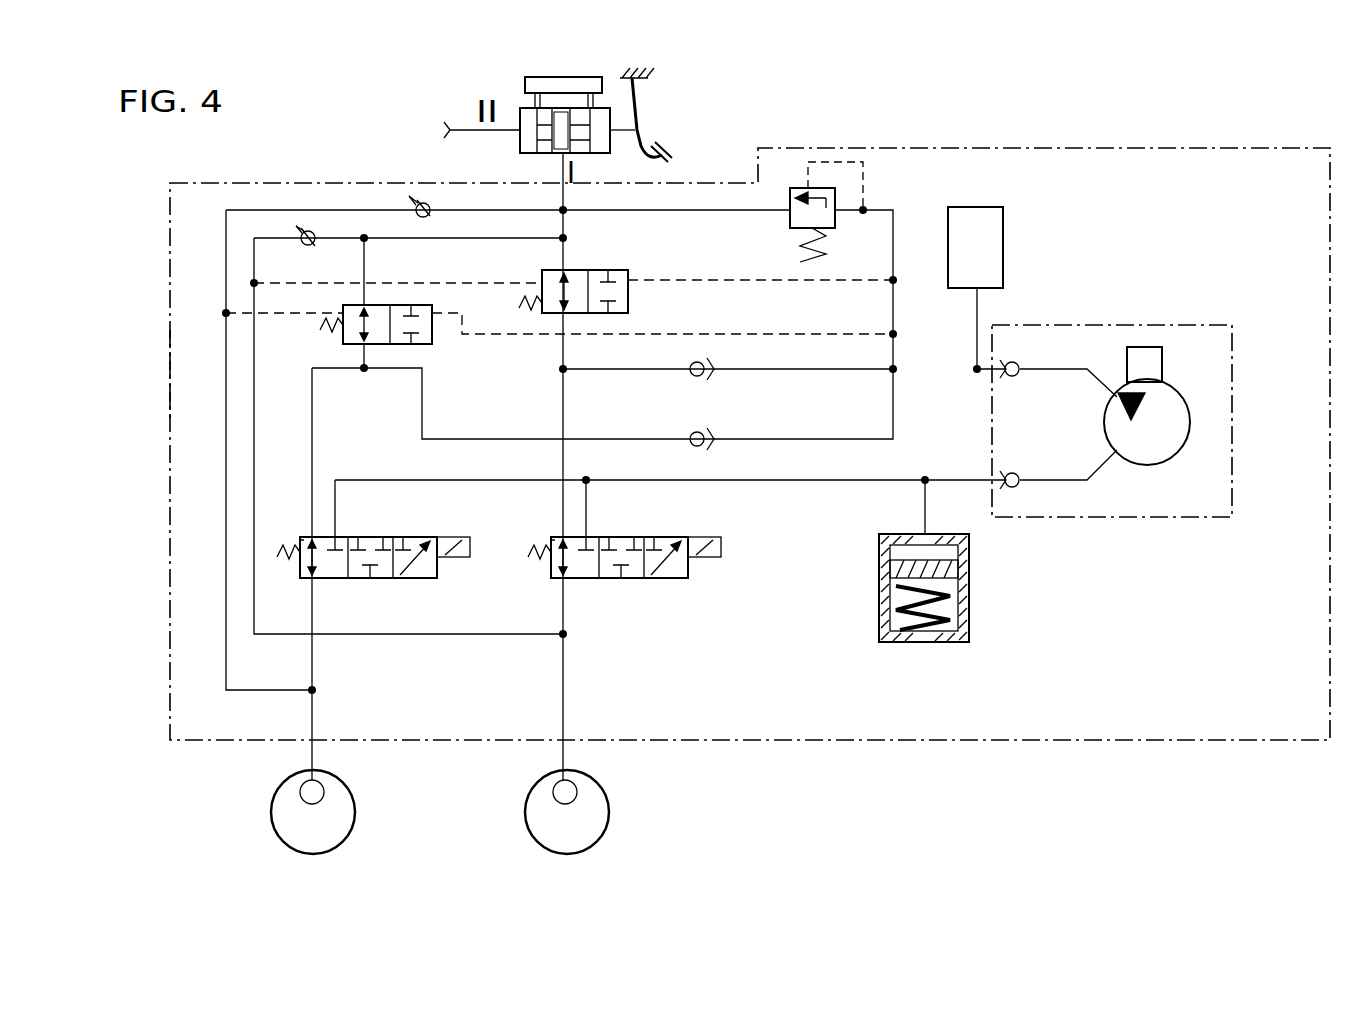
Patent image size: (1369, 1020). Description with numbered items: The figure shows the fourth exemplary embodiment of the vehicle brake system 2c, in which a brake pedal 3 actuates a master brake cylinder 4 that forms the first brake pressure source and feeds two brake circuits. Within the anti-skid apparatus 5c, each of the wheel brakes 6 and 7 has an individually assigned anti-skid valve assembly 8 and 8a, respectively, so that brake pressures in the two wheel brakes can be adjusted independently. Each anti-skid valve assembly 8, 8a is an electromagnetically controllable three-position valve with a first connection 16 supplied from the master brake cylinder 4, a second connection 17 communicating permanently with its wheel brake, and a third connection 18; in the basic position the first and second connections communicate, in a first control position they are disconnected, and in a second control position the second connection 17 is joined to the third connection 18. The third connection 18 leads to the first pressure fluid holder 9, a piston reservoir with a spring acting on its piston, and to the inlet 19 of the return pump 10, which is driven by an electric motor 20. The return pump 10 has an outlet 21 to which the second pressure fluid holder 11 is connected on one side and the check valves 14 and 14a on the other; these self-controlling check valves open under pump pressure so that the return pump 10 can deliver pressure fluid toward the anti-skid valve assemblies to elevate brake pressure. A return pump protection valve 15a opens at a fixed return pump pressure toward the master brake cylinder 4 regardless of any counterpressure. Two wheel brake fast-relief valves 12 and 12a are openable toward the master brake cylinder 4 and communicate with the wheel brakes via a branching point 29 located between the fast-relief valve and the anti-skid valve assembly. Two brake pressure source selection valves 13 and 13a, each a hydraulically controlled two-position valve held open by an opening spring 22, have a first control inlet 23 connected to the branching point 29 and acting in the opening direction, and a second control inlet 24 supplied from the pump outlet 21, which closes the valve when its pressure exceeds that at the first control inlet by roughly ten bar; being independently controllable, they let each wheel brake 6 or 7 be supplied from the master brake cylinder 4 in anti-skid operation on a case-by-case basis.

The vehicle brake system 2c is at (1185, 143).
The brake pedal 3 is at (666, 150).
The master brake cylinder 4 is at (522, 145).
The anti-skid apparatus 5c is at (168, 372).
The wheel brake 6 is at (322, 793).
The wheel brake 7 is at (575, 793).
The anti-skid valve assembly 8 is at (352, 580).
The anti-skid valve assembly 8a is at (592, 580).
The first pressure fluid holder 9 is at (966, 575).
The return pump 10 is at (1121, 320).
The second pressure fluid holder 11 is at (1004, 232).
The wheel brake fast-relief one-way valve 12 is at (417, 203).
The wheel brake fast-relief valve 12a is at (312, 245).
The brake pressure source selection valve 13 is at (428, 345).
The brake pressure source selection valve 13a is at (570, 270).
The check valve 14 is at (702, 446).
The check valve 14a is at (697, 378).
The return pump protection valve 15a is at (790, 226).
The first connection 16 is at (306, 536).
The second connection 17 is at (306, 580).
The third connection 18 is at (337, 535).
The inlet 19 is at (1002, 476).
The electric motor 20 is at (1160, 368).
The outlet 21 is at (1002, 376).
The opening spring 22 is at (518, 300).
The first control inlet 23 is at (541, 275).
The second control inlet 24 is at (629, 278).
The branching point 29 is at (224, 310).